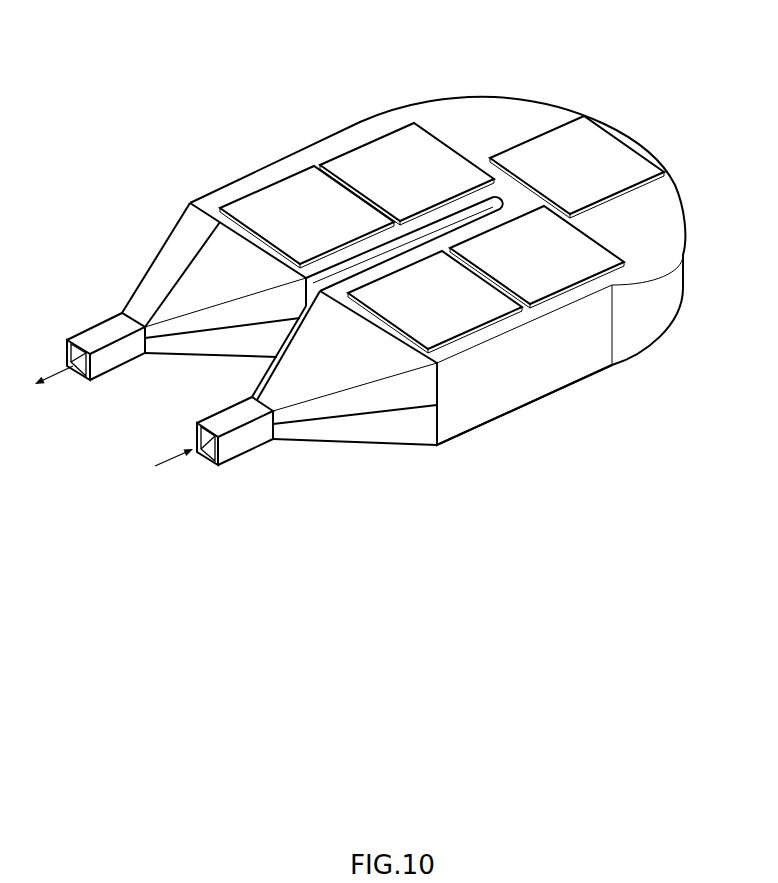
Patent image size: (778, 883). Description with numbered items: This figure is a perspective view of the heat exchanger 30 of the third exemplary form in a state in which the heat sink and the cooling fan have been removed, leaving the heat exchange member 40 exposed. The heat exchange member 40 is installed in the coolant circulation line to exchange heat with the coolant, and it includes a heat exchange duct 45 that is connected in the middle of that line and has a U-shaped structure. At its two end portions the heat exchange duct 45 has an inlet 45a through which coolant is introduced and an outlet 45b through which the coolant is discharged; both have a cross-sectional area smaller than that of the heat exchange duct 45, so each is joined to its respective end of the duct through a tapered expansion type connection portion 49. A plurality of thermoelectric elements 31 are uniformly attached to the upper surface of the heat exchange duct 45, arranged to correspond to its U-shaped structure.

The heat exchanger 30 is at (121, 40).
The thermoelectric element 31 is at (267, 186).
The heat exchange member 40 is at (412, 494).
The heat exchange duct 45 is at (463, 433).
The inlet 45a is at (247, 452).
The outlet 45b is at (98, 325).
The expansion type connection portion 49 is at (167, 350).